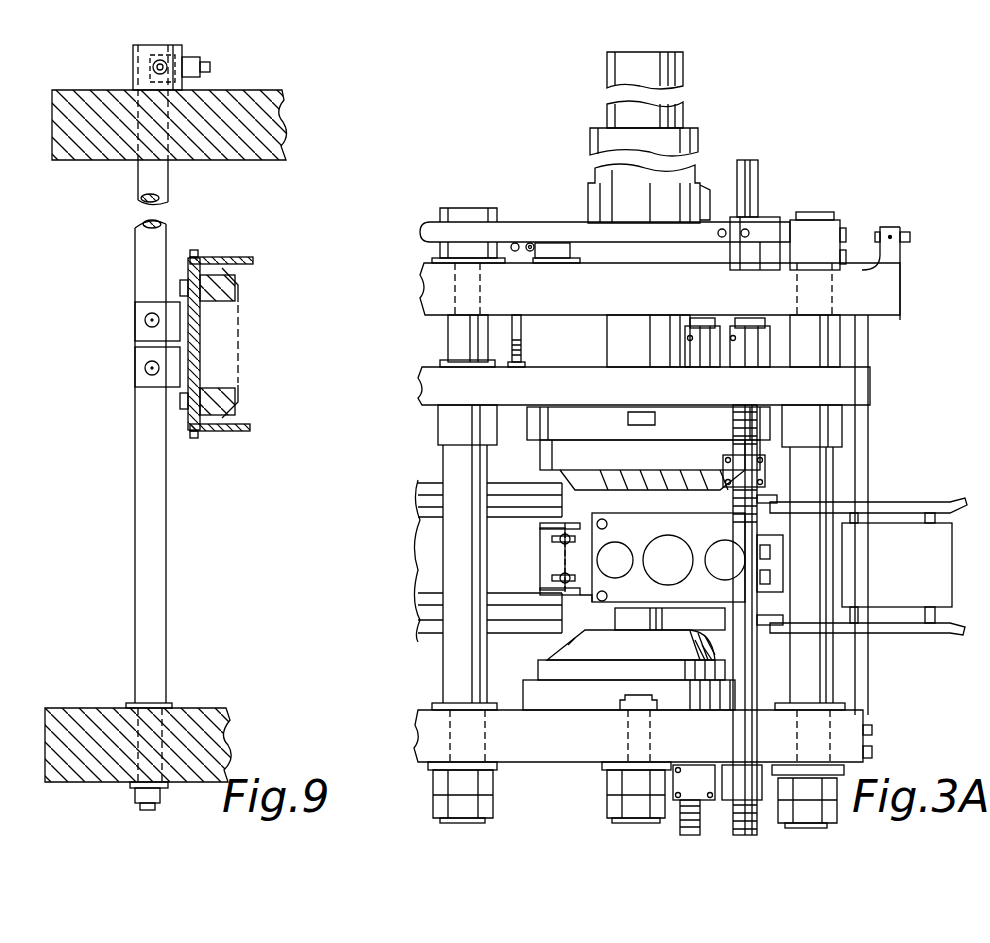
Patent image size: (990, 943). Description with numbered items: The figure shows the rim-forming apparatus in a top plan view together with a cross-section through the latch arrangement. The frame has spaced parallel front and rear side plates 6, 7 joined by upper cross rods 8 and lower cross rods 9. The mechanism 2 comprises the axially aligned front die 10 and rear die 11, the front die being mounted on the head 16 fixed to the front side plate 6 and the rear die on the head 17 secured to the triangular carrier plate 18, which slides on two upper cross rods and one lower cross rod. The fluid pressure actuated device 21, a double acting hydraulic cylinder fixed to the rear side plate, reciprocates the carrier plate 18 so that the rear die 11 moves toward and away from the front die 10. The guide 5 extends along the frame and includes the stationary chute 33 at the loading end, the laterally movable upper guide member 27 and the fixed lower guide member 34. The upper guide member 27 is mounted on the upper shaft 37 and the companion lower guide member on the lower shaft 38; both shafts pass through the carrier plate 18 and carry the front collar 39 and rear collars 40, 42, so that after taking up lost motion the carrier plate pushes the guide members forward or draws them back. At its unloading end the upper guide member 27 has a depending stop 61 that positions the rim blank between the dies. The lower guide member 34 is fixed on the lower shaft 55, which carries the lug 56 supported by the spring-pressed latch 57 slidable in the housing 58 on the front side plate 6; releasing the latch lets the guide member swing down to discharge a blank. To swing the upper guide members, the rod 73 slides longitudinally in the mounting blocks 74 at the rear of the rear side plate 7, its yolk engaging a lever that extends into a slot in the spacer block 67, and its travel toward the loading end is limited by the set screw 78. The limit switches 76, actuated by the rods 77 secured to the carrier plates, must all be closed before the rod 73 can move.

In FIG. 9, the front side plate 6 is at (70, 133).
In FIG. 9, the latch 57 is at (150, 73).
In FIG. 9, the housing 58 is at (178, 58).
In FIG. 9, the lug 56 is at (201, 78).
In FIG. 9, the lower shaft 55 is at (155, 600).
In FIG. 9, the lower guide member 34 is at (195, 428).
In FIG. 3A, the lower guide member 34 is at (428, 530).
In FIG. 9, the rear side plate 7 is at (218, 735).
In FIG. 3A, the rear side plate 7 is at (848, 312).
In FIG. 3A, the fluid pressure actuated device 21 is at (600, 200).
In FIG. 3A, the spacer block 67 is at (760, 222).
In FIG. 3A, the rod 73 is at (434, 228).
In FIG. 3A, the limit switch 76 is at (572, 250).
In FIG. 3A, the mounting block 74 is at (825, 232).
In FIG. 3A, the set screw 78 is at (904, 233).
In FIG. 3A, the rod 77 is at (522, 343).
In FIG. 3A, the rear collar or nut 42 is at (705, 335).
In FIG. 3A, the rear collar or nut 40 is at (760, 352).
In FIG. 3A, the carrier plate 18 is at (855, 400).
In FIG. 3A, the upper cross rod 8 is at (455, 466).
In FIG. 3A, the head 17 is at (540, 435).
In FIG. 3A, the rear die 11 is at (590, 470).
In FIG. 3A, the upper shaft 37 is at (750, 650).
In FIG. 3A, the front collar or nut 39 is at (762, 482).
In FIG. 3A, the mechanism 2 is at (609, 510).
In FIG. 3A, the upper guide member 27 is at (568, 559).
In FIG. 3A, the stop 61 is at (581, 606).
In FIG. 3A, the lower cross rod 9 is at (612, 620).
In FIG. 3A, the front die 10 is at (582, 640).
In FIG. 3A, the lower shaft 38 is at (700, 625).
In FIG. 3A, the head 16 is at (540, 690).
In FIG. 3A, the guide 5 is at (880, 523).
In FIG. 3A, the guide member or chute 33 is at (945, 553).